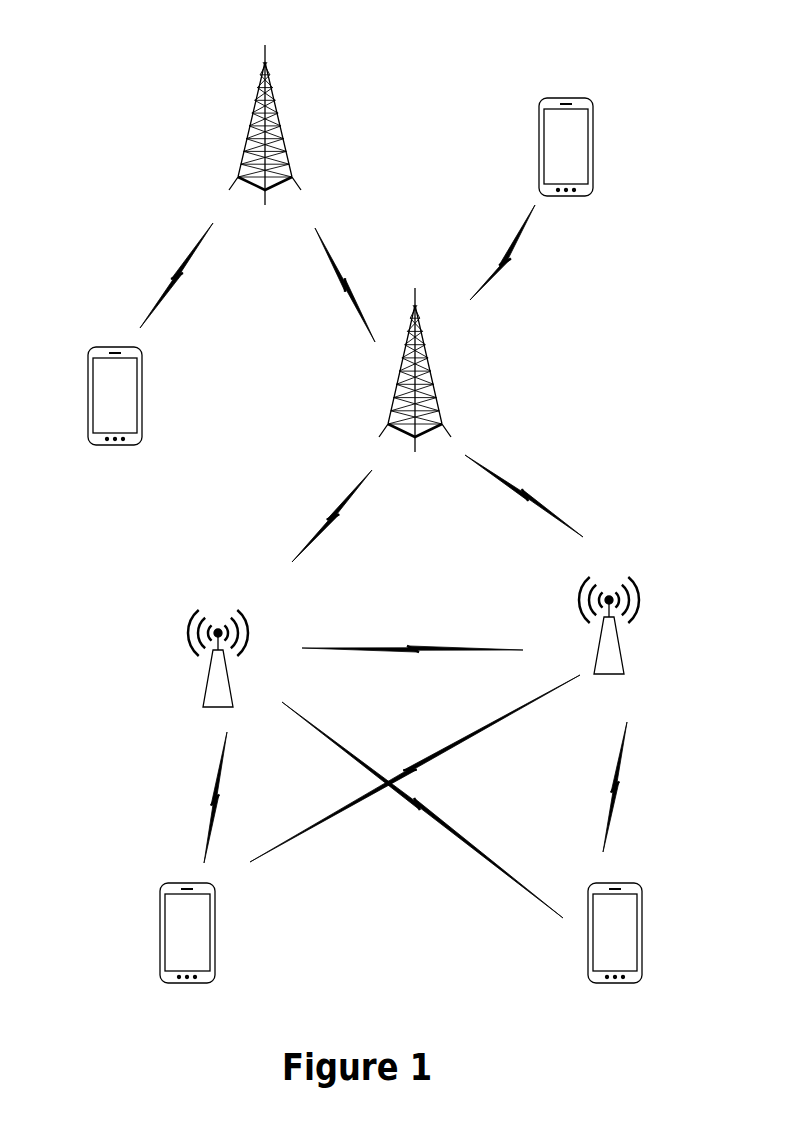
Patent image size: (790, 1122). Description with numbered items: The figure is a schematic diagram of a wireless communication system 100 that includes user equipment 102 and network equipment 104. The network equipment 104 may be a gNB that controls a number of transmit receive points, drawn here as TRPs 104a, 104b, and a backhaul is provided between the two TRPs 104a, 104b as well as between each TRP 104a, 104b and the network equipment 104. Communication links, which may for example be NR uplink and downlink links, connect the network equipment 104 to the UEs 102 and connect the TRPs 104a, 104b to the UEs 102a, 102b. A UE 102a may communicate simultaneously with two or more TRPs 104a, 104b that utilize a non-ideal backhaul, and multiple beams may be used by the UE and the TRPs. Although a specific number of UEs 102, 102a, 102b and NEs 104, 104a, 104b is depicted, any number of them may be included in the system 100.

The wireless communication system 100 is at (121, 69).
The user equipment 102 is at (340, 271).
The network equipment 104 is at (247, 129).
The transmit receive point 104a is at (185, 658).
The small cell base station 104b is at (643, 625).
The user equipment 102a is at (154, 933).
The user equipment 102b is at (647, 933).